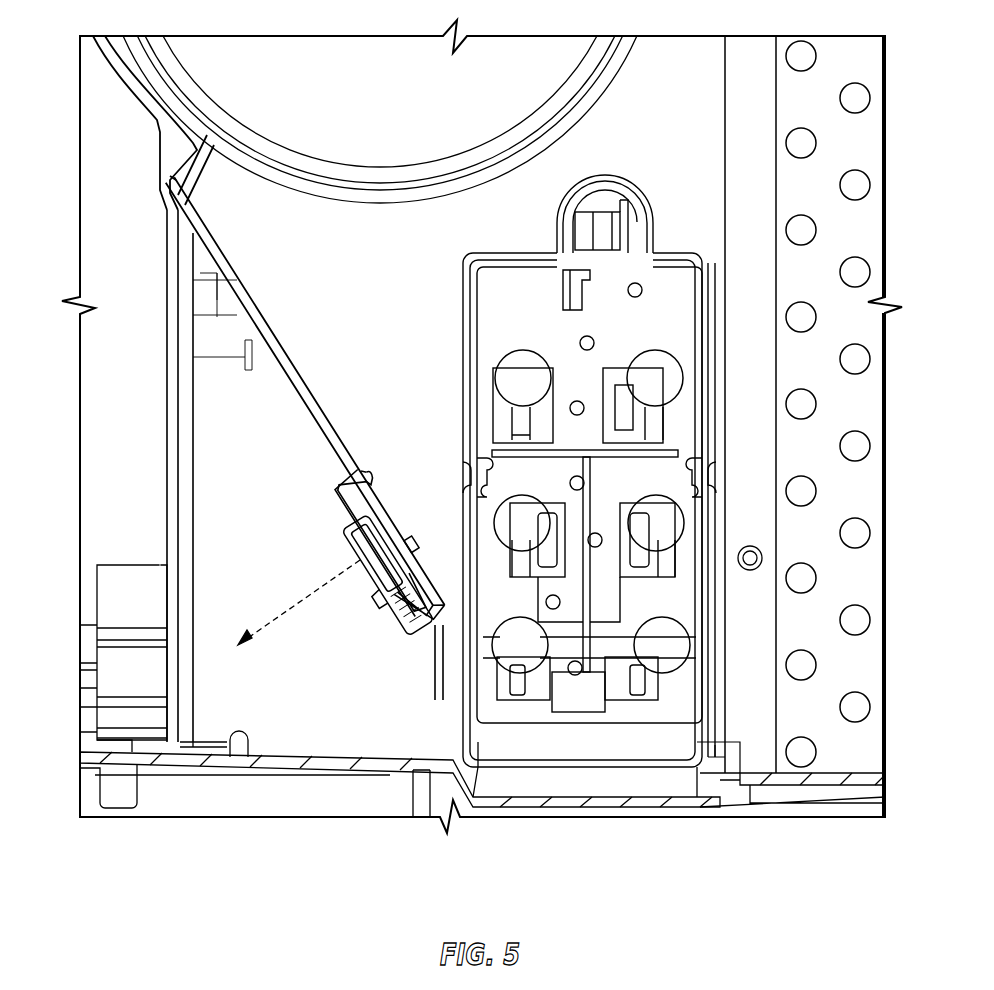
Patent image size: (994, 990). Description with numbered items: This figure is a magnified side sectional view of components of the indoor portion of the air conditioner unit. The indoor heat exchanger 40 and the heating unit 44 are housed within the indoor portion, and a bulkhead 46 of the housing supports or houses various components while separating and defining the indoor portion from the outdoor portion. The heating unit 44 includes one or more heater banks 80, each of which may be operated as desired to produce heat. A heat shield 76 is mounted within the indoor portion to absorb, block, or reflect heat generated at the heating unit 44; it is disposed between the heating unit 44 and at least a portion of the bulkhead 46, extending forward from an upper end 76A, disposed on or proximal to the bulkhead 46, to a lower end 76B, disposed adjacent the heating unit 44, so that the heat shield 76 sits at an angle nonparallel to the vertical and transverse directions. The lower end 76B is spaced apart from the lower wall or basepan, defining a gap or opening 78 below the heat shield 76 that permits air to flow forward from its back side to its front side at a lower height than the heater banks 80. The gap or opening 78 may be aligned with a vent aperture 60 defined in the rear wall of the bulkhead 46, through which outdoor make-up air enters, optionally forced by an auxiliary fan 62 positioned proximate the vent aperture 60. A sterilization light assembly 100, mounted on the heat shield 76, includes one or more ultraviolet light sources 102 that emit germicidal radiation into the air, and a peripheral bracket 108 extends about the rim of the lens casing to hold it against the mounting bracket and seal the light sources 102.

The indoor heat exchanger 40 is at (863, 233).
The heating unit 44 is at (706, 757).
The bulkhead 46 is at (172, 355).
The vent aperture 60 is at (160, 598).
The auxiliary fan 62 is at (108, 593).
The heat shield 76 is at (250, 330).
The upper end 76A is at (170, 178).
The lower end 76B is at (438, 712).
The gap or opening 78 is at (405, 745).
The heater bank 80 is at (668, 645).
The sterilization light assembly 100 is at (368, 458).
The ultraviolet light source 102 is at (400, 591).
The peripheral bracket 108 is at (345, 512).